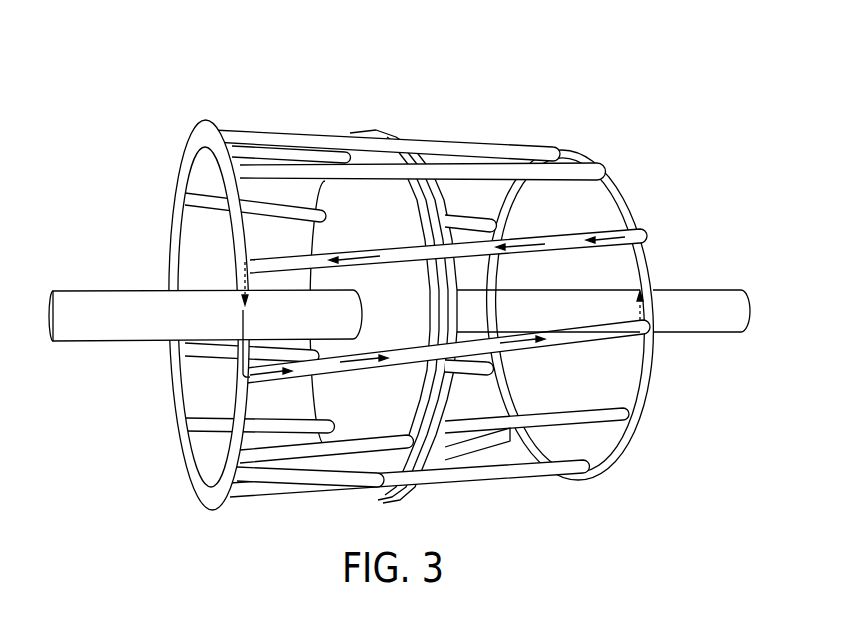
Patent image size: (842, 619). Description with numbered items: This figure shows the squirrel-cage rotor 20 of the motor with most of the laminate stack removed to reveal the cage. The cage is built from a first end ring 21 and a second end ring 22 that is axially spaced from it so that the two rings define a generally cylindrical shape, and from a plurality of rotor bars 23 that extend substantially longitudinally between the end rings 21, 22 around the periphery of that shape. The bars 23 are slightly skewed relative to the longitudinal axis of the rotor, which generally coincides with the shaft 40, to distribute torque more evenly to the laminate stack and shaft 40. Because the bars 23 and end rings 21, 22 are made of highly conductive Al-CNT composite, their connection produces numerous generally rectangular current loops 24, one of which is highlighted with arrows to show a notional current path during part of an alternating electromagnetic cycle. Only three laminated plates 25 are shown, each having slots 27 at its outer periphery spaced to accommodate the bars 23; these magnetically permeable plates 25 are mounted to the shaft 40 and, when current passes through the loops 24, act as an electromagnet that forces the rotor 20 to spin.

The rotor 20 is at (693, 187).
The first end ring 21 is at (197, 123).
The second end ring 22 is at (583, 149).
The rotor bars 23 is at (287, 129).
The current loops 24 is at (645, 254).
The laminated plates 25 is at (412, 318).
The slots 27 is at (413, 150).
The shaft 40 is at (72, 291).